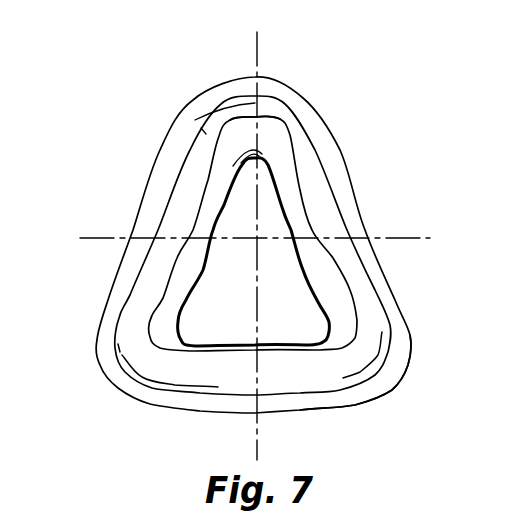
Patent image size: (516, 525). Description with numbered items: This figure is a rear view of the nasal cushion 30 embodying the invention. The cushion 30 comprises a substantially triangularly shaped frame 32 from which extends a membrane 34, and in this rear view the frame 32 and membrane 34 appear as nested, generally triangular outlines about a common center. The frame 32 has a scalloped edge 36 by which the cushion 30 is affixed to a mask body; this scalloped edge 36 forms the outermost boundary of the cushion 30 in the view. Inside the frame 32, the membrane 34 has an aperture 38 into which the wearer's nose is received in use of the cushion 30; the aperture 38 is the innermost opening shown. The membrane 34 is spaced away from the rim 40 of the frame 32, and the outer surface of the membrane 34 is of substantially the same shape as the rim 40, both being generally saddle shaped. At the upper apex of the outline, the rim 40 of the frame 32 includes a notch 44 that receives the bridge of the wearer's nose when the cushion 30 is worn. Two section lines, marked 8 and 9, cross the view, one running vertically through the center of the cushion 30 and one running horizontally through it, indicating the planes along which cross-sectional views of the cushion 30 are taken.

The nasal cushion 30 is at (340, 72).
The frame 32 is at (302, 163).
The membrane 34 is at (338, 306).
The scalloped edge 36 is at (405, 360).
The aperture 38 is at (283, 266).
The rim 40 is at (151, 330).
The notch 44 is at (237, 130).
The section line 8- 8 is at (278, 47).
The section line 9- 9 is at (92, 253).